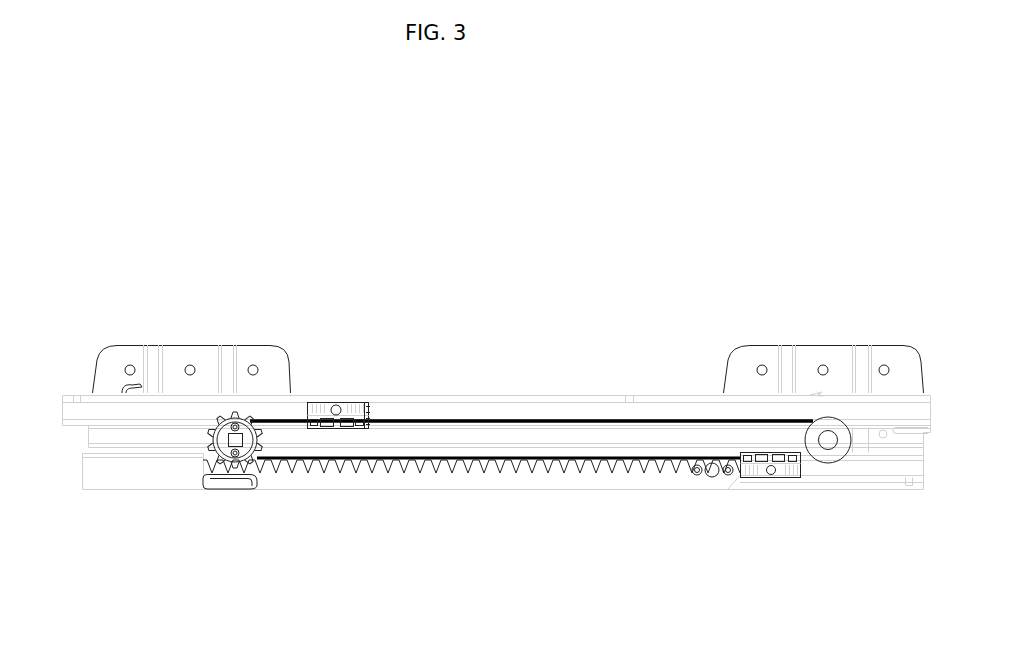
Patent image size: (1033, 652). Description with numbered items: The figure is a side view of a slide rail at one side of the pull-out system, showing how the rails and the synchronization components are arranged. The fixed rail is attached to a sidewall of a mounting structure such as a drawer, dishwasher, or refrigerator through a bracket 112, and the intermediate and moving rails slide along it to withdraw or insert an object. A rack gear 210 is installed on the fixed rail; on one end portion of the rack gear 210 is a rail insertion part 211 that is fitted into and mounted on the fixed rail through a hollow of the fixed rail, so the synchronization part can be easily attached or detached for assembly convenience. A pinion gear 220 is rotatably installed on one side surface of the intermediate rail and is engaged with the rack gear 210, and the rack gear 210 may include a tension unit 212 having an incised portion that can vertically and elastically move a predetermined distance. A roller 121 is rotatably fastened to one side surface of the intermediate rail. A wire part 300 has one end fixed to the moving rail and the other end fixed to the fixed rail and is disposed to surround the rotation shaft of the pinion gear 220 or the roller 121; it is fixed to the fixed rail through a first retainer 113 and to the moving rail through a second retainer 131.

The bracket 112 is at (152, 358).
The first retainer 113 is at (752, 478).
The roller 121 is at (830, 426).
The second retainer 131 is at (368, 417).
The rack gear 210 is at (522, 491).
The rail insertion part 211 is at (82, 455).
The tension unit 212 is at (207, 478).
The pinion gear 220 is at (243, 415).
The wire part 300 is at (293, 420).